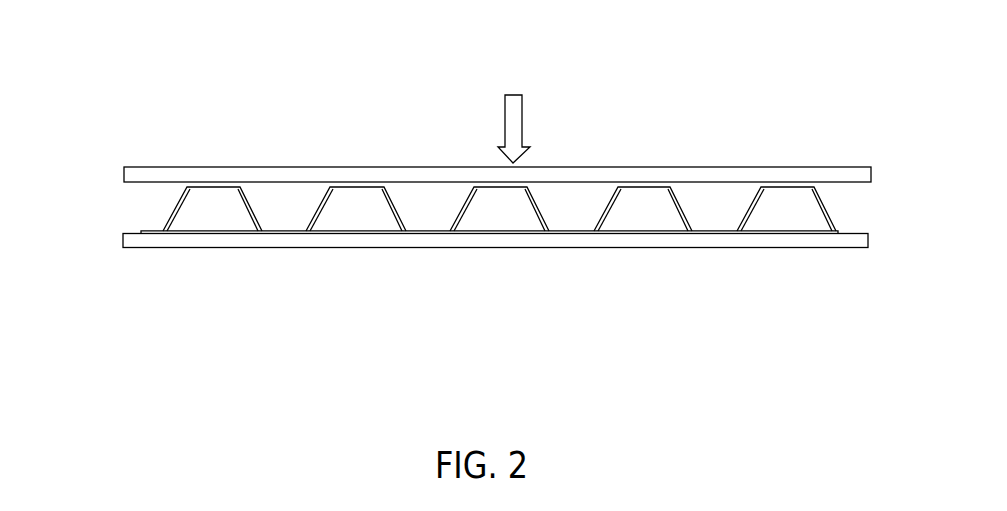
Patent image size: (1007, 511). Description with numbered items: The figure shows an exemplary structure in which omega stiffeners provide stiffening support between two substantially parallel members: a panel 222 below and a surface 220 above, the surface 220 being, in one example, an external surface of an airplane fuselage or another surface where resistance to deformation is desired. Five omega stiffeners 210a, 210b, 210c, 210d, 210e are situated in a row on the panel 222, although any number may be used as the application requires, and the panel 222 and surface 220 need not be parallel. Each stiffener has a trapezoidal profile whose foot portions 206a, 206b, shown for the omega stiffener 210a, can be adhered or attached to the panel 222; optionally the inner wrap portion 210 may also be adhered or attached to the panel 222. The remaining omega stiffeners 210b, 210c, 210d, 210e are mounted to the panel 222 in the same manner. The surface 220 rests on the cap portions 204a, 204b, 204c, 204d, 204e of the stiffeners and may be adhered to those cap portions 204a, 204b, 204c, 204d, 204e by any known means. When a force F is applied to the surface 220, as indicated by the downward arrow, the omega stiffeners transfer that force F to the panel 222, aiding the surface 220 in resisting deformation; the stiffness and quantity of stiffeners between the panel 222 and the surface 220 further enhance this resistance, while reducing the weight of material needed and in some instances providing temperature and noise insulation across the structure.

The surface 220 is at (837, 167).
The panel 222 is at (852, 248).
The cap portion 204a is at (205, 186).
The cap portion 204b is at (347, 186).
The cap portion 204c is at (478, 186).
The cap portion 204d is at (642, 186).
The cap portion 204e is at (781, 186).
The inner wrap portion 210 is at (203, 232).
The omega stiffener 210a is at (167, 220).
The omega stiffener 210b is at (317, 208).
The omega stiffener 210c is at (462, 210).
The omega stiffener 210d is at (605, 208).
The omega stiffener 210e is at (747, 208).
The foot portion 206a is at (148, 234).
The foot portion 206b is at (272, 233).
The force F is at (513, 92).